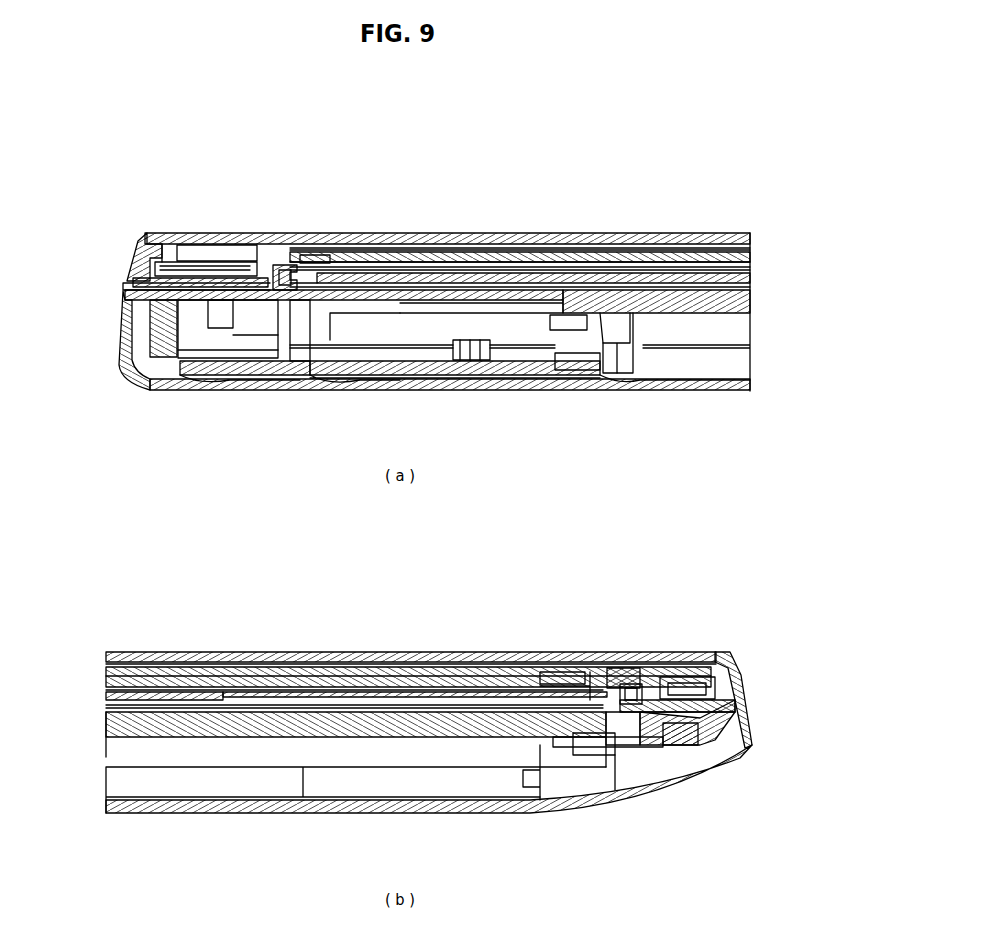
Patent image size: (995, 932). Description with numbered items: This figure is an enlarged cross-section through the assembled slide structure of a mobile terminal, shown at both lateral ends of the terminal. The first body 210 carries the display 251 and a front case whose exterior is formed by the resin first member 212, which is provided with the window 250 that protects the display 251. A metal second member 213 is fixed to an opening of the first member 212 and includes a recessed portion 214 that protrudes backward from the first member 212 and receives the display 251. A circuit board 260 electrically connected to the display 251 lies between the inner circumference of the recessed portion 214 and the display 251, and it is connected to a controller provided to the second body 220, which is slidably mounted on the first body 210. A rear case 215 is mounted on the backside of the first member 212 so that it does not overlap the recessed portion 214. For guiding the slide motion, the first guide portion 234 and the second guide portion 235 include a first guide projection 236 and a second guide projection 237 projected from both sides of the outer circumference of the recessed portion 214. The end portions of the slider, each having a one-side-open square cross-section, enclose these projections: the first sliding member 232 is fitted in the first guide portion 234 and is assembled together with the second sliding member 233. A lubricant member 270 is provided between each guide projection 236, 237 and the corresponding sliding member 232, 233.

The first body 210 is at (131, 206).
The first member 212 is at (141, 237).
The second member 213 is at (620, 675).
The recessed portion 214 is at (307, 256).
The rear case 215 is at (123, 284).
The second body 220 is at (102, 328).
The first sliding member 232 is at (283, 298).
The second sliding member 233 is at (655, 726).
The first guide portion 234 is at (287, 250).
The second guide portion 235 is at (602, 688).
The first guide projection 236 is at (298, 284).
The second guide projection 237 is at (618, 737).
The window 250 is at (207, 238).
The display 251 is at (398, 257).
The circuit board 260 is at (528, 262).
The lubricant member 270 is at (301, 292).